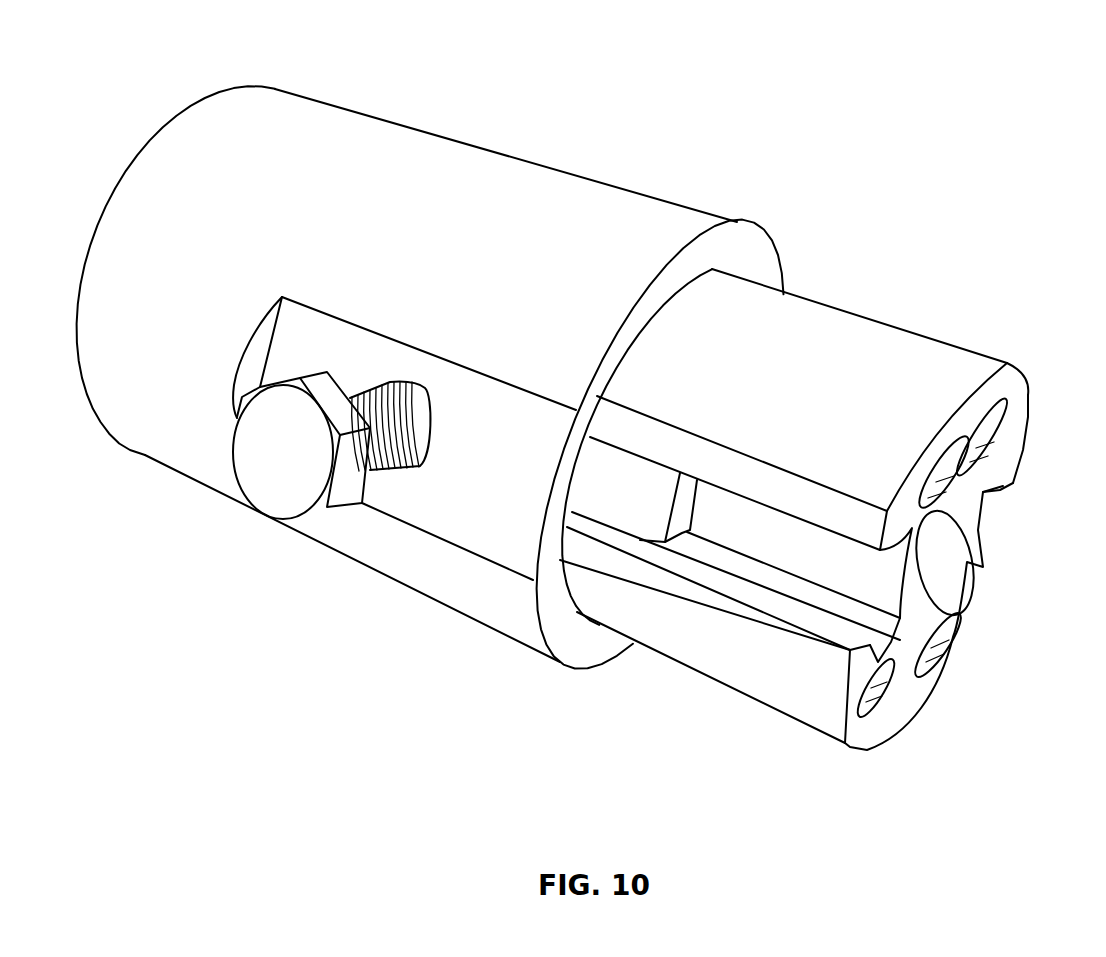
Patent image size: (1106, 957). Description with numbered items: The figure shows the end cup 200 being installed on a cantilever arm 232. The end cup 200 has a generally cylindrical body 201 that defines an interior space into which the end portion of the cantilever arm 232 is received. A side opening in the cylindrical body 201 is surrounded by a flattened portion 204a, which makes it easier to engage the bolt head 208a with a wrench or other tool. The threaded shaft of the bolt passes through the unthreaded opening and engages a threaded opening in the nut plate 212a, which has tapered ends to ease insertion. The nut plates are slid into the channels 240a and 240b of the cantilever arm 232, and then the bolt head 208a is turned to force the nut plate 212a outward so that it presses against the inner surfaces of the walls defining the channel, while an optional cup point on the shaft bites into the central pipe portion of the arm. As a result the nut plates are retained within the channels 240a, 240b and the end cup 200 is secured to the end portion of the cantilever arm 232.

The end cup 200 is at (576, 422).
The cylindrical body 201 is at (430, 377).
The flattened portion 204a is at (450, 500).
The bolt head 208a is at (260, 453).
The nut plate 212a is at (648, 513).
The cantilever arm 232 is at (858, 323).
The channel 240a is at (870, 582).
The channel 240b is at (980, 533).